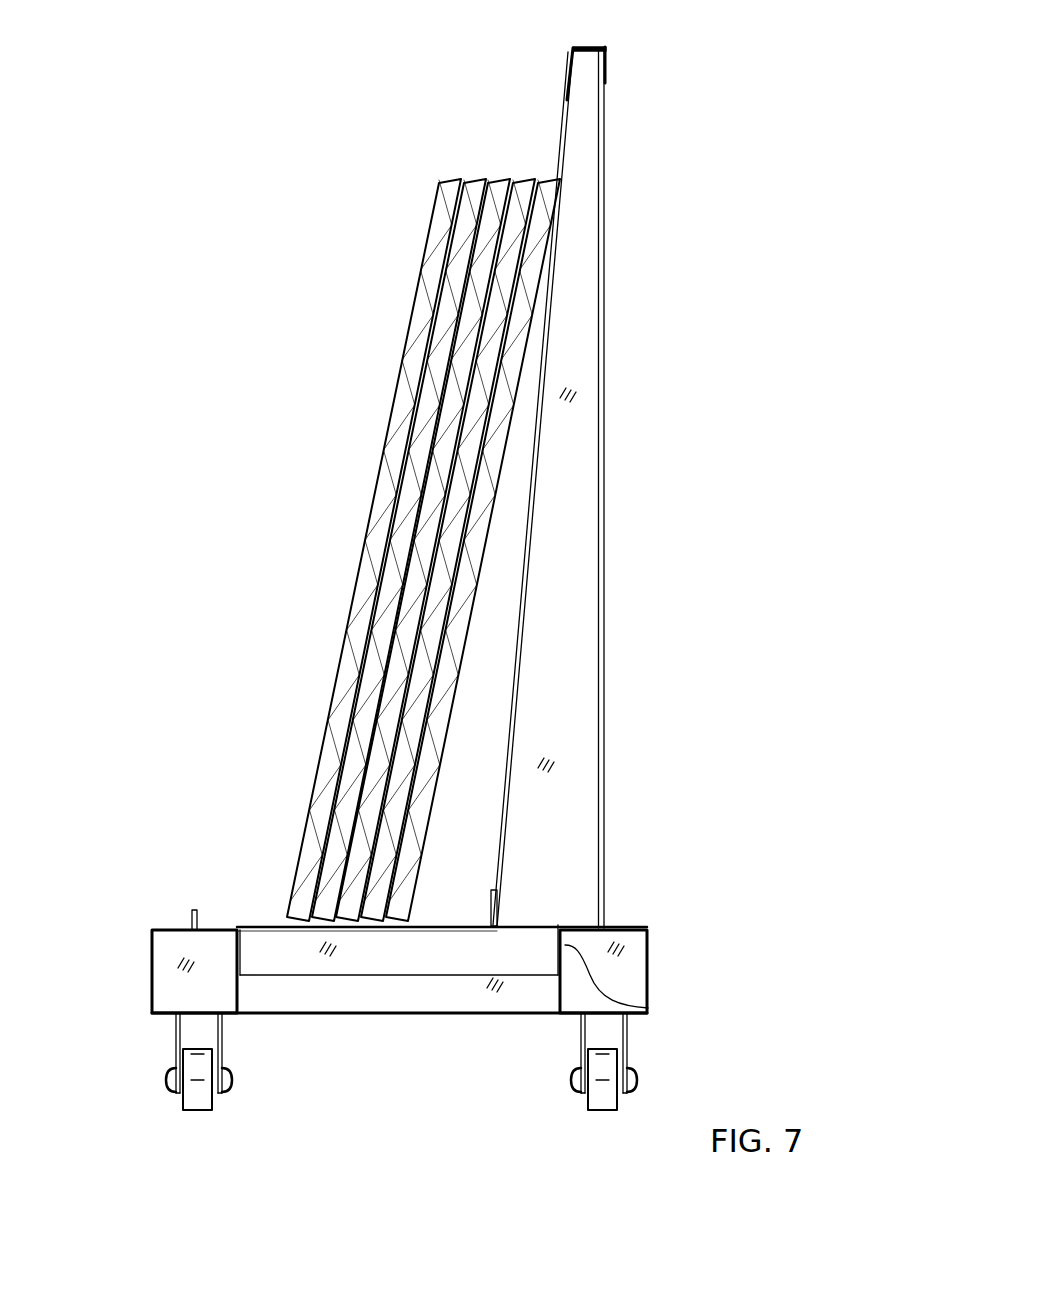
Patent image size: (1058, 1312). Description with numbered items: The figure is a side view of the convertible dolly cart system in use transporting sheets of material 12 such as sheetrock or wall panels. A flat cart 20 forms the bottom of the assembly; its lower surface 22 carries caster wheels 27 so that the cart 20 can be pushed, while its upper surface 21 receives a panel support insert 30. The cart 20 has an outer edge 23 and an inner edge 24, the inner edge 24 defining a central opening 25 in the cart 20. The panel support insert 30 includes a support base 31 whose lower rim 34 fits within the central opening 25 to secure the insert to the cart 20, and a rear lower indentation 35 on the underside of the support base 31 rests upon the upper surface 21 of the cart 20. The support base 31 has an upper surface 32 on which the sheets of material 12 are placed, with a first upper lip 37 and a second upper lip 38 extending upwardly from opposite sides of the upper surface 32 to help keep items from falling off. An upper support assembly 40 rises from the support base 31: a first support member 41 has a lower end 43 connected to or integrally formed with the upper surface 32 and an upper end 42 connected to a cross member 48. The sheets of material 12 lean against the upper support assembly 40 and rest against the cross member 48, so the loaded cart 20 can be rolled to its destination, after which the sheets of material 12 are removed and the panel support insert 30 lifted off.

The sheets of material 12 is at (405, 350).
The cart 20 is at (140, 952).
The upper surface 21 is at (626, 930).
The lower surface 22 is at (420, 1015).
The outer edge 23 is at (648, 950).
The inner edge 24 is at (240, 998).
The central opening 25 is at (423, 1008).
The wheels 27 is at (200, 1112).
The panel support insert 30 is at (240, 638).
The support base 31 is at (238, 928).
The upper surface 32 is at (270, 925).
The lower rim 34 is at (460, 950).
The rear lower indentation 35 is at (648, 1008).
The first upper lip 37 is at (190, 915).
The second upper lip 38 is at (492, 918).
The upper support assembly 40 is at (612, 352).
The first support member 41 is at (576, 537).
The upper end 42 is at (588, 67).
The lower end 43 is at (568, 916).
The cross member 48 is at (590, 47).